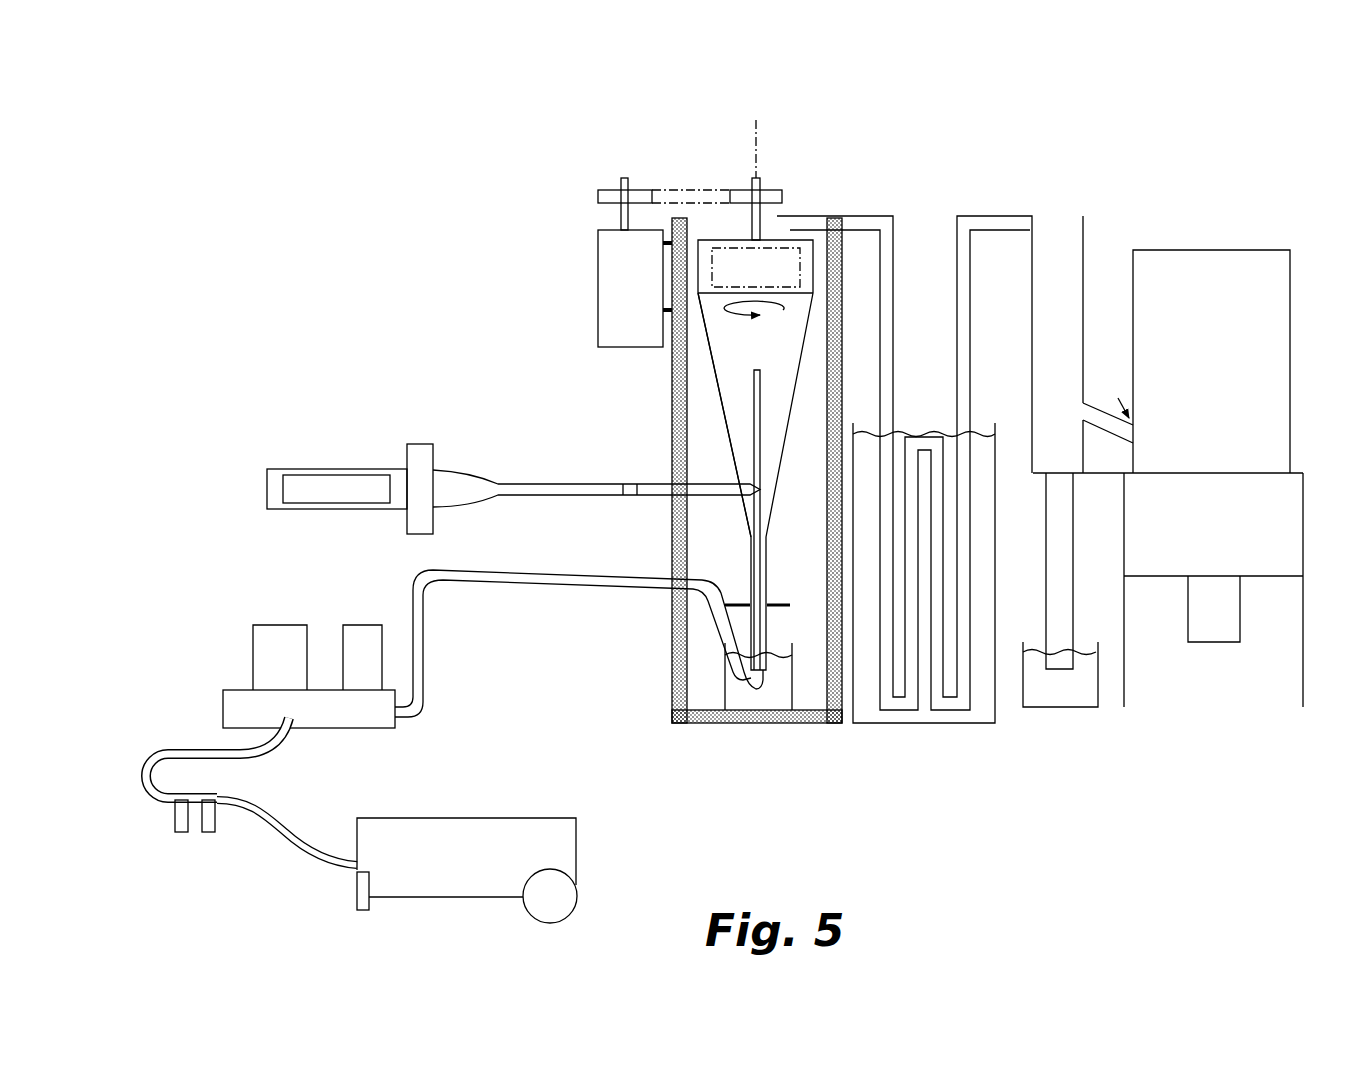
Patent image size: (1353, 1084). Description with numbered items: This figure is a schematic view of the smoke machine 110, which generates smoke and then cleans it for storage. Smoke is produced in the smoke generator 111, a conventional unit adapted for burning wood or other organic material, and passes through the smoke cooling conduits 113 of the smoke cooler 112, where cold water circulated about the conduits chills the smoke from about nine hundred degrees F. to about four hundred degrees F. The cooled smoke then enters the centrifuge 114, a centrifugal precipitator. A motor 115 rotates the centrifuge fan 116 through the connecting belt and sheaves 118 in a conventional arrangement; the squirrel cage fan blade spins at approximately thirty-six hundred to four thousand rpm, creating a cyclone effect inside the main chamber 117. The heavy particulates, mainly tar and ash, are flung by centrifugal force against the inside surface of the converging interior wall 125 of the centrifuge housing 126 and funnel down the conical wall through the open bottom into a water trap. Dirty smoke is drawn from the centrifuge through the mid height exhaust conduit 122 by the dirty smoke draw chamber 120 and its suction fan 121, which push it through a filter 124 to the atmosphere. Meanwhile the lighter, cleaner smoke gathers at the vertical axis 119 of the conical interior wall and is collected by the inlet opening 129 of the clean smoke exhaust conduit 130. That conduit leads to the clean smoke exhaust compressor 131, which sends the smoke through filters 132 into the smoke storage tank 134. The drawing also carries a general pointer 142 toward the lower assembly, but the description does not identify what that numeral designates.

The smoke machine 110 is at (602, 133).
The smoke generator 111 is at (1222, 248).
The smoke cooler 112 is at (917, 233).
The smoke cooling conduits 113 is at (962, 383).
The centrifuge 114 is at (727, 184).
The motor 115 is at (598, 290).
The centrifuge fan 116 is at (790, 263).
The main chamber 117 is at (742, 347).
The belt and sheaves 118 is at (658, 188).
The vertical axis 119 is at (757, 140).
The dirty smoke draw chamber 120 is at (283, 468).
The suction fan 121 is at (418, 443).
The mid height exhaust conduit 122 is at (511, 483).
The filter 124 is at (300, 503).
The converging interior wall 125 is at (723, 393).
The centrifuge housing 126 is at (727, 433).
The inlet opening 129 is at (760, 370).
The clean smoke exhaust conduit 130 is at (584, 575).
The clean smoke exhaust compressor 131 is at (338, 725).
The filters 132 is at (210, 832).
The smoke storage tank 134 is at (540, 817).
The ultrasonic processing assembly 142 is at (667, 858).